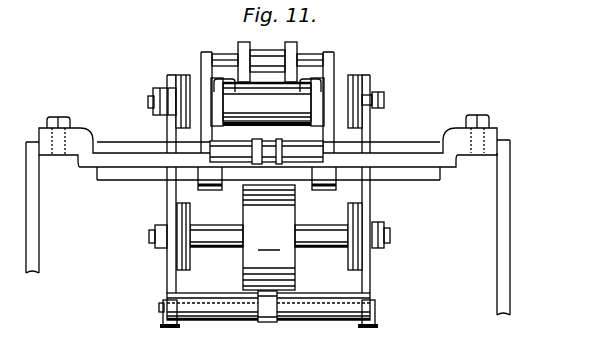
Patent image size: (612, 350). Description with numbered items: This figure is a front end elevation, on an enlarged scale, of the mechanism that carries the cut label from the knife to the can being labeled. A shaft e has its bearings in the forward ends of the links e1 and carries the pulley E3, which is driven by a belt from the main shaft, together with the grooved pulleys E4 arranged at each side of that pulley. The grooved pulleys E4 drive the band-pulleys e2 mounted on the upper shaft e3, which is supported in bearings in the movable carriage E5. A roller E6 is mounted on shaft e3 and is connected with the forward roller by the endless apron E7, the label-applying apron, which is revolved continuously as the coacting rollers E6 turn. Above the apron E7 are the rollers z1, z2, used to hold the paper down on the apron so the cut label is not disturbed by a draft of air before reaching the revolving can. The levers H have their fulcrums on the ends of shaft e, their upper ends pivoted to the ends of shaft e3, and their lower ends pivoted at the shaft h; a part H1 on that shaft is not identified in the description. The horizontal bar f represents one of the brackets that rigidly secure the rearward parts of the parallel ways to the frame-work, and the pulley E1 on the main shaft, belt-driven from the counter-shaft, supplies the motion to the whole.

The levers H is at (167, 199).
The collar on shaft h H1 is at (270, 308).
The shaft h is at (228, 306).
The brackets f is at (97, 160).
The roller z1 is at (238, 46).
The roller z2 is at (286, 46).
The endless apron E7 is at (300, 82).
The roller E6 is at (267, 102).
The movable carriage E5 is at (218, 131).
The pulley E1 is at (266, 151).
The grooved pulleys E4 is at (190, 212).
The pulley E3 is at (269, 237).
The band-pulleys e2 is at (178, 80).
The shaft e3 is at (386, 101).
The links e1 is at (205, 230).
The shaft e is at (385, 236).